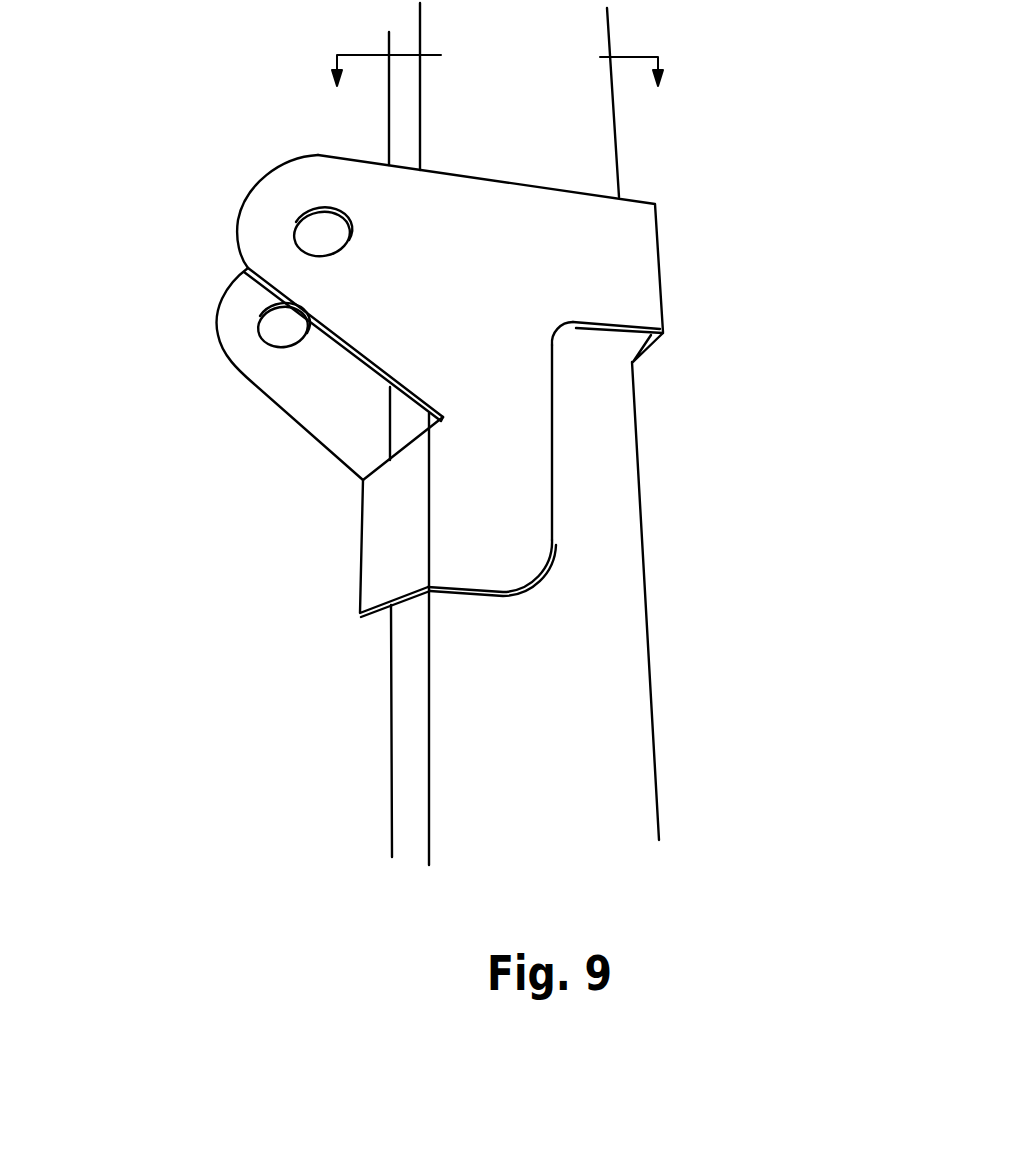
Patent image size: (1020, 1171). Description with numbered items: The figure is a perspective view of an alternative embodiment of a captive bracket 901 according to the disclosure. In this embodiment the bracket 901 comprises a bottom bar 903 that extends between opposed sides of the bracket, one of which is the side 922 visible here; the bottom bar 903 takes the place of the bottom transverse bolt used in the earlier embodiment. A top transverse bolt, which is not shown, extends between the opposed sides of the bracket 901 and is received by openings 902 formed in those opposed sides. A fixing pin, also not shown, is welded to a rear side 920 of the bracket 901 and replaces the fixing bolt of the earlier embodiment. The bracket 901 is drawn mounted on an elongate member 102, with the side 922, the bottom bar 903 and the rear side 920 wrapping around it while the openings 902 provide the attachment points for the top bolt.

The rail 102 is at (535, 108).
The captive bracket 901 is at (399, 360).
The openings 902 is at (318, 239).
The bottom bar 903 is at (408, 556).
The rear side 920 is at (645, 352).
The side 922 is at (518, 524).